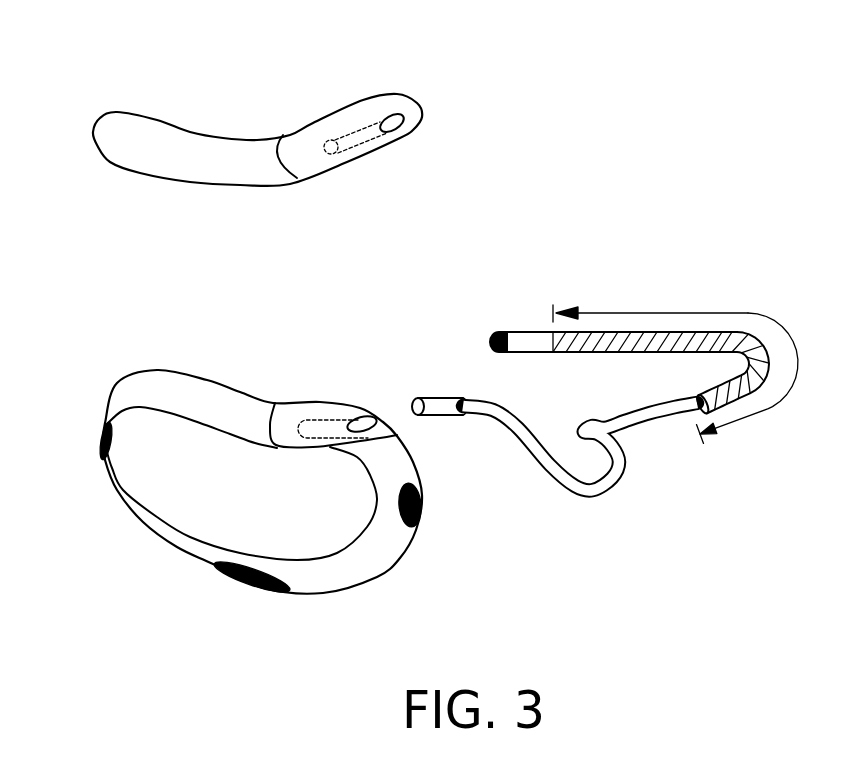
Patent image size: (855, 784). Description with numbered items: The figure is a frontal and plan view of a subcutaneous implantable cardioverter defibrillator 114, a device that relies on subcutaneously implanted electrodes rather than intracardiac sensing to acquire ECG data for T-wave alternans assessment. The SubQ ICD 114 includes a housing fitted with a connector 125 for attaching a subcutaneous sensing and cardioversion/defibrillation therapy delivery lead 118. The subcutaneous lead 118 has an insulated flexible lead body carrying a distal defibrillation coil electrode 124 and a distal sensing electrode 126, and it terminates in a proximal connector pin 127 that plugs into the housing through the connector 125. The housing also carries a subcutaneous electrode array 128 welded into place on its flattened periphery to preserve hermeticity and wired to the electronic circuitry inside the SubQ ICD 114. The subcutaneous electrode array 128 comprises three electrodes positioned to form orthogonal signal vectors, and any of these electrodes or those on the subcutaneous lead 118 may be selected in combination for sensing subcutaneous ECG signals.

The subcutaneous implantable cardioverter defibrillator 114 is at (208, 100).
The subcutaneous lead 118 is at (651, 457).
The distal defibrillation coil electrode 124 is at (690, 313).
The connector 125 is at (345, 113).
The distal sensing electrode 126 is at (490, 342).
The proximal connector pin 127 is at (447, 413).
The subcutaneous electrode array 128 is at (100, 447).